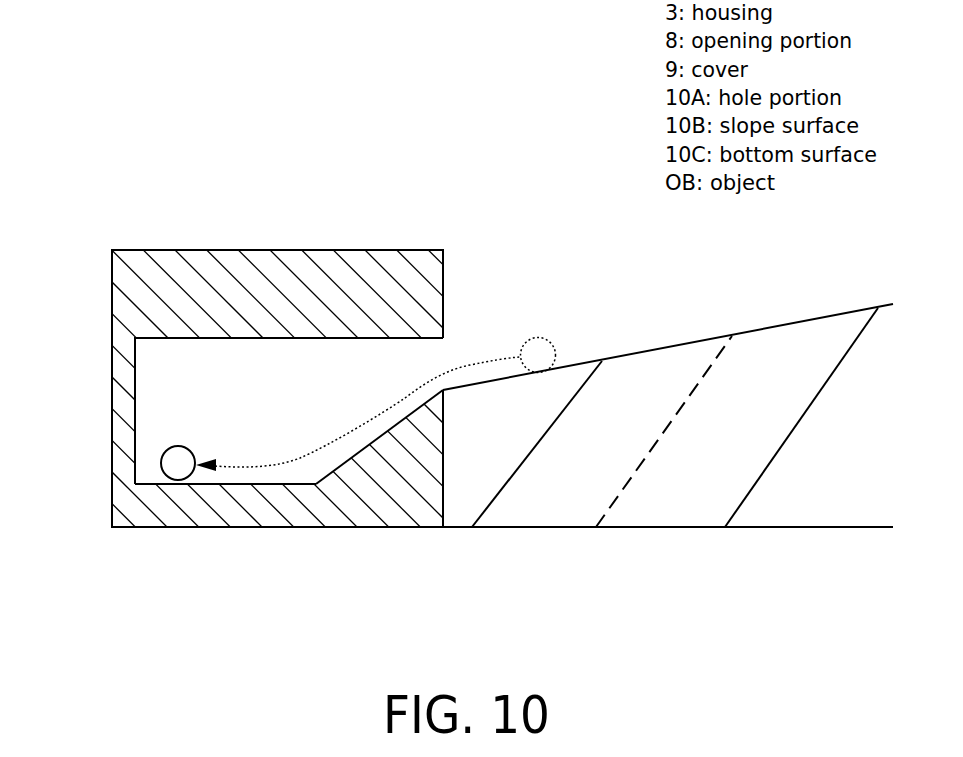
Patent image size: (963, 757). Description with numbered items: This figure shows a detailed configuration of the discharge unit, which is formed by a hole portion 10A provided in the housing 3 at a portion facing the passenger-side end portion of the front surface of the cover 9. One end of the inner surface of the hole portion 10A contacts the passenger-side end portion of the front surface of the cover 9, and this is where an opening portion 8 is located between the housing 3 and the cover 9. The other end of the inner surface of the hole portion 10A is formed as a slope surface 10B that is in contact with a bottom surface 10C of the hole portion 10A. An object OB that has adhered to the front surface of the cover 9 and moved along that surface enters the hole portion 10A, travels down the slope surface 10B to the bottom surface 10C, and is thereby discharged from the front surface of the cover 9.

The housing 3 is at (415, 305).
The opening portion 8 is at (443, 252).
The cover 9 is at (808, 513).
The hole portion 10A is at (275, 445).
The slope surface 10B is at (401, 420).
The bottom surface 10C is at (245, 484).
The object OB is at (178, 446).